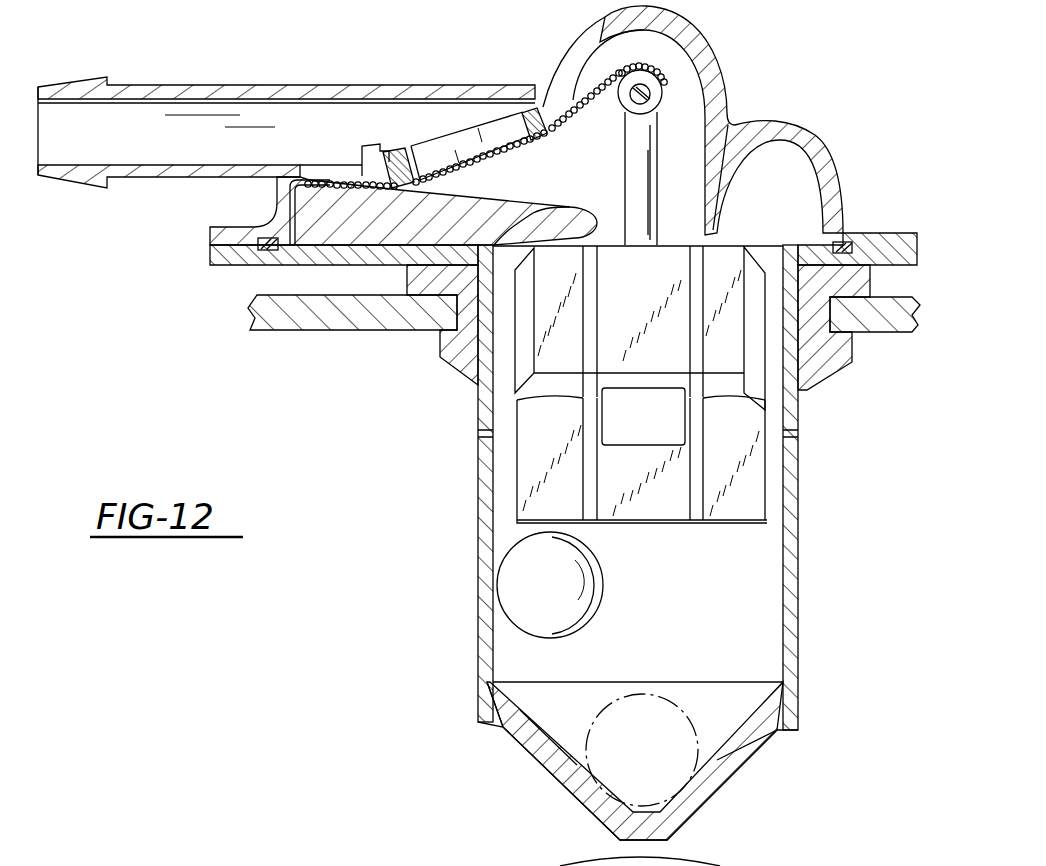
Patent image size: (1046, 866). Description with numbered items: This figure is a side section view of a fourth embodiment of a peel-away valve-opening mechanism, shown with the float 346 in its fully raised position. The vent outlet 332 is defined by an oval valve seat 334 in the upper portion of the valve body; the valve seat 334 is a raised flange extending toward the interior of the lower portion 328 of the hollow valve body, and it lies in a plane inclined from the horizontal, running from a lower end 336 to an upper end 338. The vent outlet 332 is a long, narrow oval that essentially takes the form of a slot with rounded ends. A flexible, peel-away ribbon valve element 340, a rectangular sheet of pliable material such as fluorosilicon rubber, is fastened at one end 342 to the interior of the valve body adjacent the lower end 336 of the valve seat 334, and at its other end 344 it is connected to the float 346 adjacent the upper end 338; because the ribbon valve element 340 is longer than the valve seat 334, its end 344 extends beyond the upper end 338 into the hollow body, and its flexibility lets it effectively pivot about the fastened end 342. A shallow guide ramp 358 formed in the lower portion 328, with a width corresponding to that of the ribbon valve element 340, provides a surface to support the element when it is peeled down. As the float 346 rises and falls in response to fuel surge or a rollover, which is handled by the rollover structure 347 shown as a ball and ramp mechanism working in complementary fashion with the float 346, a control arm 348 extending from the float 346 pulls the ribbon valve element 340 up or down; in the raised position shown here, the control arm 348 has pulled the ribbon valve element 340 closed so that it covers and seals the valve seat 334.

The lower portion of the hollow valve body 328 is at (797, 603).
The vent outlet 332 is at (448, 135).
The oval valve seat 334 is at (398, 187).
The lower end of the valve seat 336 is at (399, 185).
The upper end of the valve seat 338 is at (547, 110).
The ribbon valve element 340 is at (497, 150).
The fastened end of the valve element 342 is at (312, 182).
The other end of the valve element 344 is at (657, 70).
The float 346 is at (527, 462).
The rollover structure 347 is at (500, 572).
The control arm 348 is at (650, 153).
The guide ramp 358 is at (603, 240).